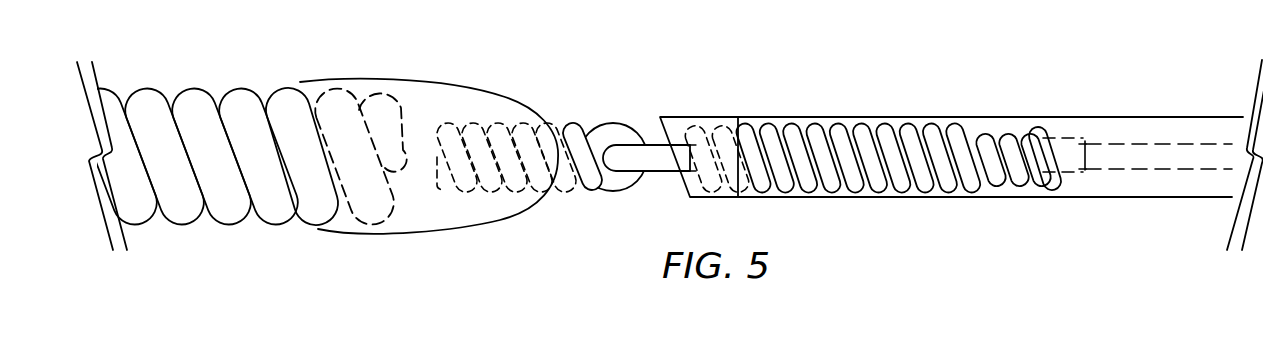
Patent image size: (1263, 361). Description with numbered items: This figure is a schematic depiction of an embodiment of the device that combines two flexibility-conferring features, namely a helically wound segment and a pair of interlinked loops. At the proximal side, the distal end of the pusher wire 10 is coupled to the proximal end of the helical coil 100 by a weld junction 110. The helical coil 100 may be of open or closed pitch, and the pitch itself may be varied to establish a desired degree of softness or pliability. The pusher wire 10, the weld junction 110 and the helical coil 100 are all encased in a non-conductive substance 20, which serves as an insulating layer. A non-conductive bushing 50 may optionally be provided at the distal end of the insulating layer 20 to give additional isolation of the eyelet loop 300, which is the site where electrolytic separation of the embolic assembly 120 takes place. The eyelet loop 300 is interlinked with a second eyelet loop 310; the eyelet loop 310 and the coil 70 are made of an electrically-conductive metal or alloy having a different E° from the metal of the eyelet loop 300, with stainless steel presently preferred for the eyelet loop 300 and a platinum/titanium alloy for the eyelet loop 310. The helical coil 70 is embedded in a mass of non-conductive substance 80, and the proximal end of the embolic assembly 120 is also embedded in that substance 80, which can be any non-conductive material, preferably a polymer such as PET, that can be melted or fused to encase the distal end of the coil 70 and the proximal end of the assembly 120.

The pusher wire 10 is at (1165, 144).
The non-conductive substance 20 is at (1004, 113).
The non-conductive bushing 50 is at (675, 119).
The helical coil 70 is at (571, 187).
The non-conductive substance 80 is at (435, 110).
The helical coil 100 is at (885, 129).
The weld junction 110 is at (1075, 148).
The embolic assembly 120 is at (192, 104).
The eyelet loop 300 is at (655, 186).
The eyelet loop 310 is at (598, 119).